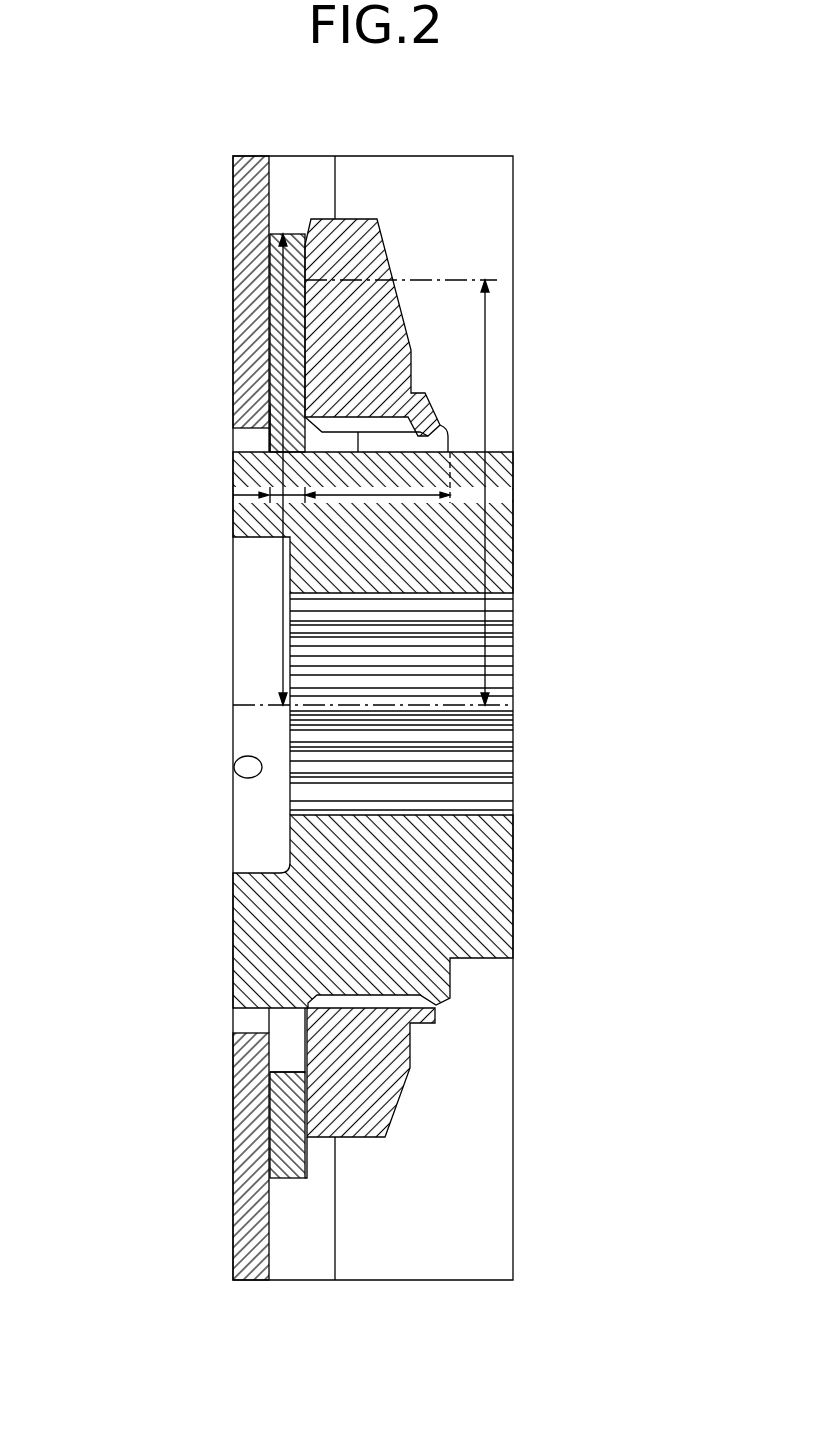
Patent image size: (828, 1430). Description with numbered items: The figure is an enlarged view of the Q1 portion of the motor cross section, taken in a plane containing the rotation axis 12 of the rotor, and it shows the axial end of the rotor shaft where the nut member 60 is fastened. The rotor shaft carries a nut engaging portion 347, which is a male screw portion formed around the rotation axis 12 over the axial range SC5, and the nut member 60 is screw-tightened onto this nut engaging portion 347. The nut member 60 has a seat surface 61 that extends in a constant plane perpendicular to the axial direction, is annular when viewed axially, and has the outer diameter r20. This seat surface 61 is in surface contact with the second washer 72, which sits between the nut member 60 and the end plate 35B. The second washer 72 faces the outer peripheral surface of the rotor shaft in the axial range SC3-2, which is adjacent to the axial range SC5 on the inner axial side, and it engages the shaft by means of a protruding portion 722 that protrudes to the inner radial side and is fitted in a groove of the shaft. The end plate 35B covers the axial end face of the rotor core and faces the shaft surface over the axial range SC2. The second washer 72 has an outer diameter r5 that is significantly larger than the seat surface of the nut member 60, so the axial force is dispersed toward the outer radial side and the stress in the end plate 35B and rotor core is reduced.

The Q1 portion Q1 is at (400, 156).
The end plate 35B is at (251, 278).
The outer diameter of the second washer r5 is at (287, 310).
The outer diameter of the seat surface r20 is at (401, 492).
The seat surface 61 is at (293, 360).
The protruding portion 722 is at (278, 420).
The axial range SC2 is at (252, 498).
The axial range SC3-2 is at (278, 500).
The axial range SC5 is at (377, 490).
The rotation axis 12 is at (255, 704).
The nut engaging portion 347 is at (387, 993).
The nut member 60 is at (357, 1078).
The second washer 72 is at (290, 1150).